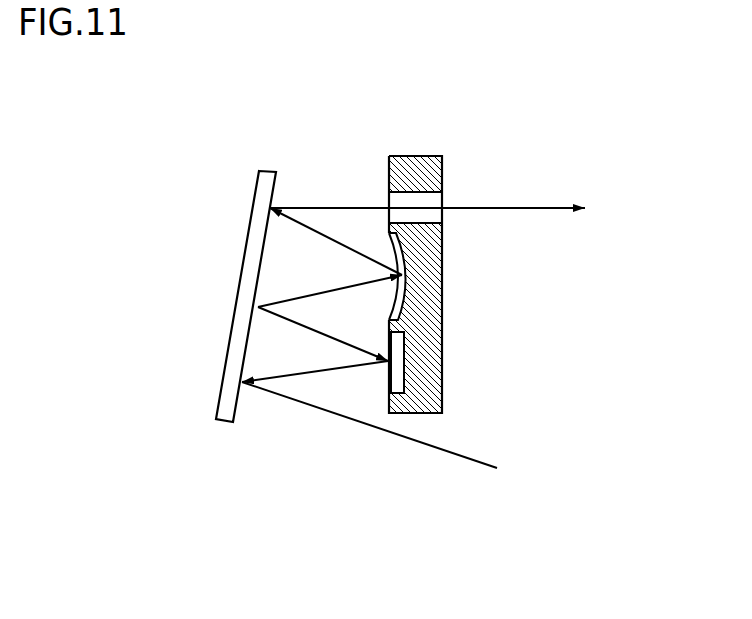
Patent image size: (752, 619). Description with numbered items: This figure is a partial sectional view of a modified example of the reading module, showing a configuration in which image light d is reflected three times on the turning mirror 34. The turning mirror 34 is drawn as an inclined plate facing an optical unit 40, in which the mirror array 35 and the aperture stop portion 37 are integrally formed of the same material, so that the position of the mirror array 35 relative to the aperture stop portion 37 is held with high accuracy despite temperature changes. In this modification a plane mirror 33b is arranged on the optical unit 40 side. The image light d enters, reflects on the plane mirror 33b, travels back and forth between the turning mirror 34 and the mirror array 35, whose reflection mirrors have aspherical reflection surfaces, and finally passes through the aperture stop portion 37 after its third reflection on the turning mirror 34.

The optical unit 40 is at (417, 157).
The aperture stop portion 37 is at (435, 217).
The mirror array 35 is at (407, 277).
The plane mirror 33b is at (391, 375).
The turning mirror 34 is at (238, 312).
The image light d is at (440, 448).